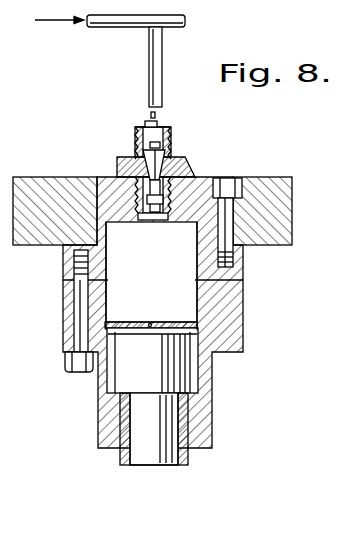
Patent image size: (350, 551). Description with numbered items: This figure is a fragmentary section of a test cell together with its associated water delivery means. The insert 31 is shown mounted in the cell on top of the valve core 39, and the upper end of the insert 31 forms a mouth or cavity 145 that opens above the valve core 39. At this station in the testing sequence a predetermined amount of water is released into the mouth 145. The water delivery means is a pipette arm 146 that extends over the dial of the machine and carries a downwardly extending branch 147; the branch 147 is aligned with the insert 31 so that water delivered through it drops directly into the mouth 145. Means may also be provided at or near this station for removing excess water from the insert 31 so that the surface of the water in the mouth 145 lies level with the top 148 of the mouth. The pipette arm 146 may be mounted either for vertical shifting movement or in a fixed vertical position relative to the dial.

The insert 31 is at (190, 164).
The valve core 39 is at (172, 139).
The mouth or cavity 145 is at (148, 125).
The pipette arm 146 is at (107, 26).
The downwardly extending branch 147 is at (149, 61).
The top of the mouth 148 is at (143, 128).